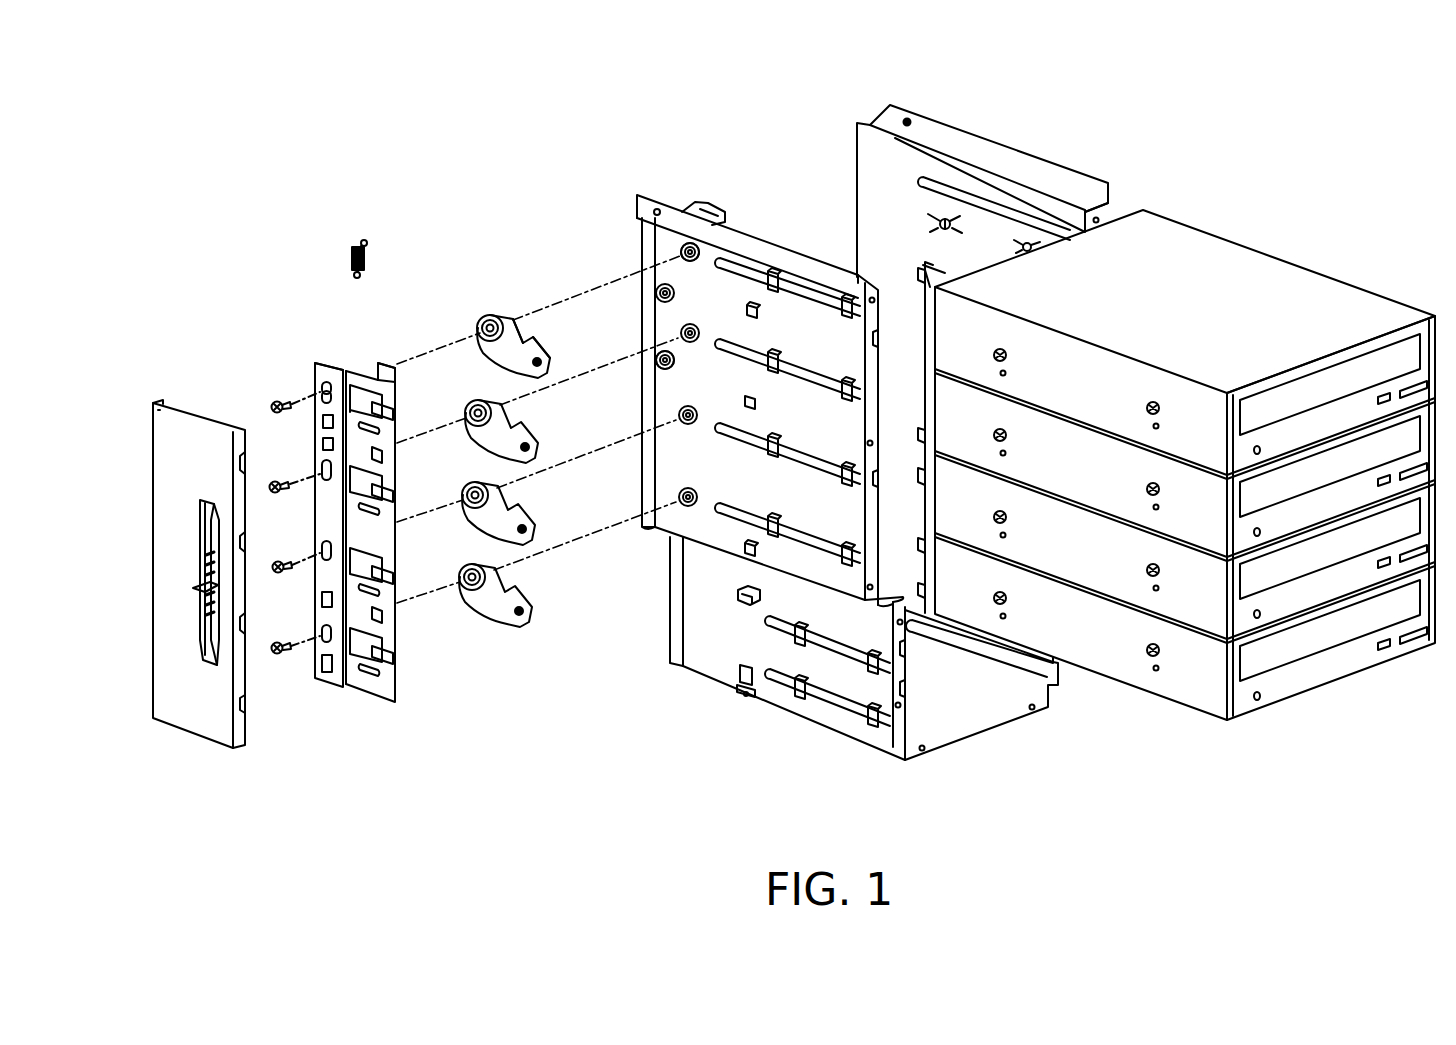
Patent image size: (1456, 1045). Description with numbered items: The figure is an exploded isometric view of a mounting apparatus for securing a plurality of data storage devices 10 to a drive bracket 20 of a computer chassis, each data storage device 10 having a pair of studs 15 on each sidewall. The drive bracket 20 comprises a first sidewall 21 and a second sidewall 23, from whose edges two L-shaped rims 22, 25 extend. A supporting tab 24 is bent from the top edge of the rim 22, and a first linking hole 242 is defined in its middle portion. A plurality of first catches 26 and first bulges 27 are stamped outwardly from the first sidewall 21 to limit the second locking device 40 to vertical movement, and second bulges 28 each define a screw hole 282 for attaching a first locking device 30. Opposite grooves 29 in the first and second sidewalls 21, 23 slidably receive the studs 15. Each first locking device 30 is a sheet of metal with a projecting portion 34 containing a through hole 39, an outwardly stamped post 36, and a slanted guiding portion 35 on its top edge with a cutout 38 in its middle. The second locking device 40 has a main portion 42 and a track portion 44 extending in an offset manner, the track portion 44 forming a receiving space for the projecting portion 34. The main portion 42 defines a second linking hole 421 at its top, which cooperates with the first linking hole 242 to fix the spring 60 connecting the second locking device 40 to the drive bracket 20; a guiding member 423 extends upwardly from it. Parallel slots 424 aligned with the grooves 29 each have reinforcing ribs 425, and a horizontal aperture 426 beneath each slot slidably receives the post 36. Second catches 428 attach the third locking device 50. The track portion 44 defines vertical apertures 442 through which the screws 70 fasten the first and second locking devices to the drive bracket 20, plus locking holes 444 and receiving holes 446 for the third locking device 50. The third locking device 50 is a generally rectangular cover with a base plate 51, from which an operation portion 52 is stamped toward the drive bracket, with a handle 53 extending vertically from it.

The data storage devices 10 is at (1185, 460).
The studs 15 is at (1148, 652).
The drive bracket 20 is at (834, 414).
The first sidewall 21 is at (700, 522).
The L-shaped rim 22 is at (762, 246).
The second sidewall 23 is at (882, 160).
The supporting tab 24 is at (702, 205).
The first linking hole 242 is at (710, 212).
The L-shaped rim 25 is at (1045, 170).
The first catches 26 is at (752, 304).
The first bulges 27 is at (660, 368).
The second bulges 28 is at (690, 243).
The screw hole 282 is at (680, 250).
The grooves 29 is at (805, 290).
The first locking devices 30 is at (528, 439).
The projecting portion 34 is at (497, 316).
The slanted guiding portion 35 is at (541, 347).
The post 36 is at (542, 362).
The cutout 38 is at (522, 340).
The through hole 39 is at (482, 320).
The second locking device 40 is at (353, 528).
The main portion 42 is at (405, 496).
The second linking hole 421 is at (358, 383).
The guiding member 423 is at (380, 362).
The slots 424 is at (388, 403).
The reinforcing ribs 425 is at (386, 480).
The horizontal aperture 426 is at (378, 592).
The second catches 428 is at (378, 622).
The track portion 44 is at (284, 494).
The vertical apertures 442 is at (326, 372).
The locking holes 444 is at (322, 424).
The receiving holes 446 is at (323, 446).
The third locking device 50 is at (165, 574).
The base plate 51 is at (175, 488).
The operation portion 52 is at (210, 630).
The handle 53 is at (200, 590).
The spring 60 is at (355, 245).
The screws 70 is at (272, 404).